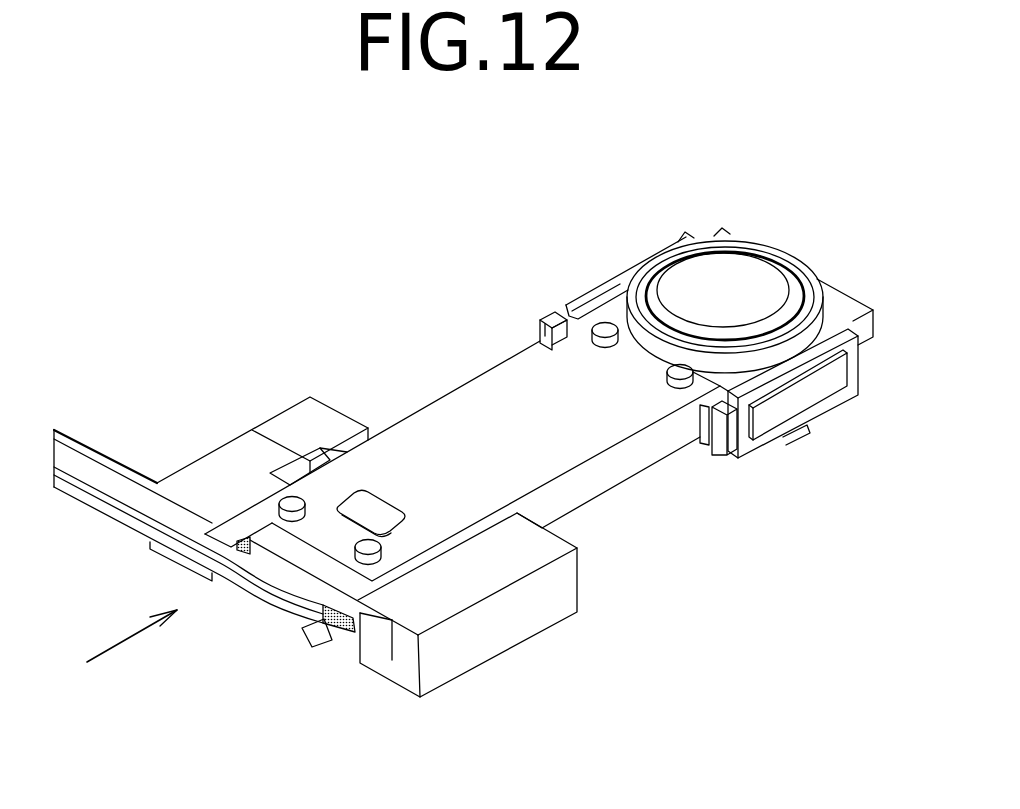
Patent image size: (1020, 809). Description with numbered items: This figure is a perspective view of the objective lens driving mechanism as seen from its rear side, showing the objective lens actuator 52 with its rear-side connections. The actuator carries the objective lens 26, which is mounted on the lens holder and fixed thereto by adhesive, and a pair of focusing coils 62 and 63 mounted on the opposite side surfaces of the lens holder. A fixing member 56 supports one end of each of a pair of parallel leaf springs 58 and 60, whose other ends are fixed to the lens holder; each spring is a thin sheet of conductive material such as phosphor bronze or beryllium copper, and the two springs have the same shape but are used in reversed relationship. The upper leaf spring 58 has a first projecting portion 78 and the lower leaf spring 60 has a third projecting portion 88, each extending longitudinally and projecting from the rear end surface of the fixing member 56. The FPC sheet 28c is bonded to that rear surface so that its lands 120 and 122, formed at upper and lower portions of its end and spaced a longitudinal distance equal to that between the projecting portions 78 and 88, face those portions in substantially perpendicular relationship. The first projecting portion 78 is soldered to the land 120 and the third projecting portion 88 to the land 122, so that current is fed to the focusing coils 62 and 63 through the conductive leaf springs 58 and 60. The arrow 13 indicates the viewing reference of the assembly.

The magnetic head assembly 13 is at (103, 648).
The objective lens 26 is at (745, 268).
The FPC sheet 28c is at (92, 450).
The objective lens actuator 52 is at (566, 277).
The fixing member 56 is at (490, 645).
The upper leaf spring 58 is at (467, 388).
The lower leaf spring 60 is at (600, 483).
The focusing coil 62 is at (615, 277).
The focusing coil 63 is at (820, 413).
The first projecting portion 78 is at (234, 527).
The third projecting portion 88 is at (305, 628).
The land 120 is at (238, 553).
The land 122 is at (337, 637).